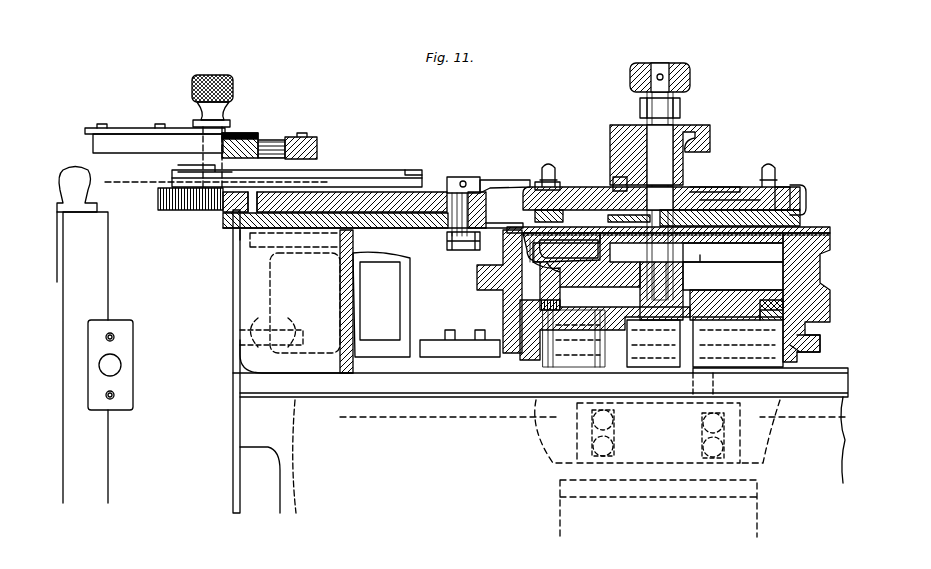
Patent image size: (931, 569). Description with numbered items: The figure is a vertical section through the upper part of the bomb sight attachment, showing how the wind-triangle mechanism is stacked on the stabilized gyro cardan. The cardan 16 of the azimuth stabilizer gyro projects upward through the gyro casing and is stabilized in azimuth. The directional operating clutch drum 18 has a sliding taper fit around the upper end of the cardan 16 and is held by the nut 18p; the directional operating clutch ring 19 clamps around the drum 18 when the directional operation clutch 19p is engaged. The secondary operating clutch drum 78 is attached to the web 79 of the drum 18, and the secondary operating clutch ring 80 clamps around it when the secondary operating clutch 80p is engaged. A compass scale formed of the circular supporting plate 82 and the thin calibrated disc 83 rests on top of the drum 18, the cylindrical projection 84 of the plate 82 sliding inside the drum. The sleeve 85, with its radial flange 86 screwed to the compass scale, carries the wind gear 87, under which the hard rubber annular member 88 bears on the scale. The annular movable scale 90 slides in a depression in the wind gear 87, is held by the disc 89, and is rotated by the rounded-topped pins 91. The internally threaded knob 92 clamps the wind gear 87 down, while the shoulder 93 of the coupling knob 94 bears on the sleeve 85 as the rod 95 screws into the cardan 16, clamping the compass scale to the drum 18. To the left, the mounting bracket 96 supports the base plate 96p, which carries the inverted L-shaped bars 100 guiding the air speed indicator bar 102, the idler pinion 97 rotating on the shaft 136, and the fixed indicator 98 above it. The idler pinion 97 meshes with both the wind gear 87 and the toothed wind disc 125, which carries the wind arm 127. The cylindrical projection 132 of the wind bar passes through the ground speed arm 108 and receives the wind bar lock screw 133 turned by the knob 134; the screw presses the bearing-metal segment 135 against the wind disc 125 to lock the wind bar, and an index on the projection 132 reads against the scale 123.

The wind bar lock knob 134 is at (211, 77).
The scale 123 is at (140, 130).
The ground speed arm 108 is at (90, 146).
The cylindrical projection 132 is at (200, 148).
The wind bar lock screw 133 is at (175, 168).
The rectangular segment of bearing metal 135 is at (206, 186).
The wind arm 127 is at (376, 169).
The wind disc 125 is at (178, 212).
The inverted L-shaped bars 100 is at (232, 212).
The idler pinion 97 is at (410, 190).
The fixed indicator 98 is at (528, 185).
The shaft 136 is at (462, 251).
The mounting bracket 96 is at (314, 298).
The air speed indicator bar 102 is at (292, 229).
The base plate 96p is at (378, 230).
The directional operation clutch 19p is at (470, 296).
The coupling knob 94 is at (690, 68).
The shoulder 93 is at (640, 105).
The knob 92 is at (705, 128).
The rod 95 is at (615, 180).
The disc 89 is at (598, 188).
The annular movable scale 90 is at (540, 186).
The rounded-topped pins 91 is at (549, 165).
The sleeve 85 is at (700, 188).
The flange 86 is at (725, 200).
The annular member 88 is at (783, 188).
The wind gear 87 is at (805, 190).
The supported disc 83 is at (812, 218).
The supporting plate 82 is at (822, 233).
The directional operating clutch ring 19 is at (818, 276).
The secondary operating clutch ring 80 is at (812, 338).
The secondary operating clutch 80p is at (805, 347).
The cylindrical projection 84 is at (565, 244).
The web 79 is at (583, 290).
The nut 18p is at (705, 262).
The directional operating clutch drum 18 is at (775, 274).
The secondary operating clutch drum 78 is at (752, 346).
The cardan 16 is at (673, 526).